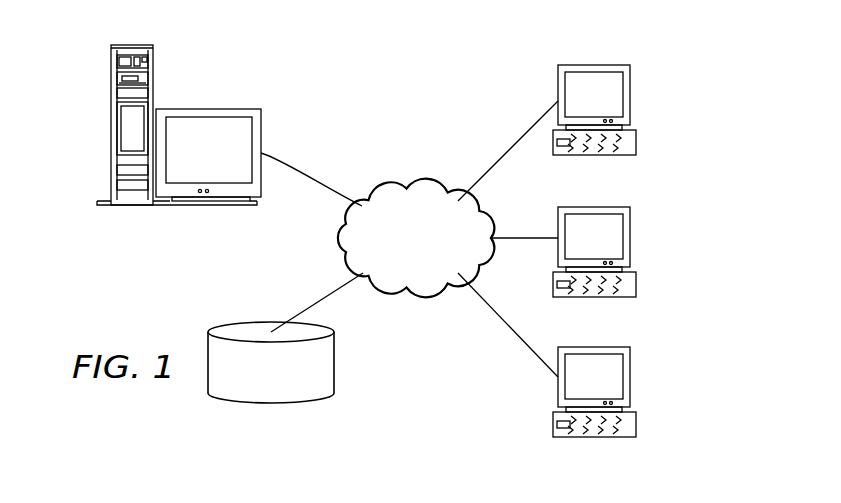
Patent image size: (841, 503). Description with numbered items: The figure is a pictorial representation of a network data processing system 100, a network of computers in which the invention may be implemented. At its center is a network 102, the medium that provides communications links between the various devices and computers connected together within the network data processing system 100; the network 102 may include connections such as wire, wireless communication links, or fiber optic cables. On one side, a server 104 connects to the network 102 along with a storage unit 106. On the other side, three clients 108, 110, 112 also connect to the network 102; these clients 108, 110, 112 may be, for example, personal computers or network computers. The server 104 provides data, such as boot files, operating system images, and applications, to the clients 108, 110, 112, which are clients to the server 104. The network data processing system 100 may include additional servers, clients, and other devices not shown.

The network data processing system 100 is at (472, 71).
The network 102 is at (385, 189).
The server 104 is at (111, 128).
The storage unit 106 is at (253, 404).
The client 108 is at (630, 95).
The client 110 is at (630, 237).
The client 112 is at (630, 378).